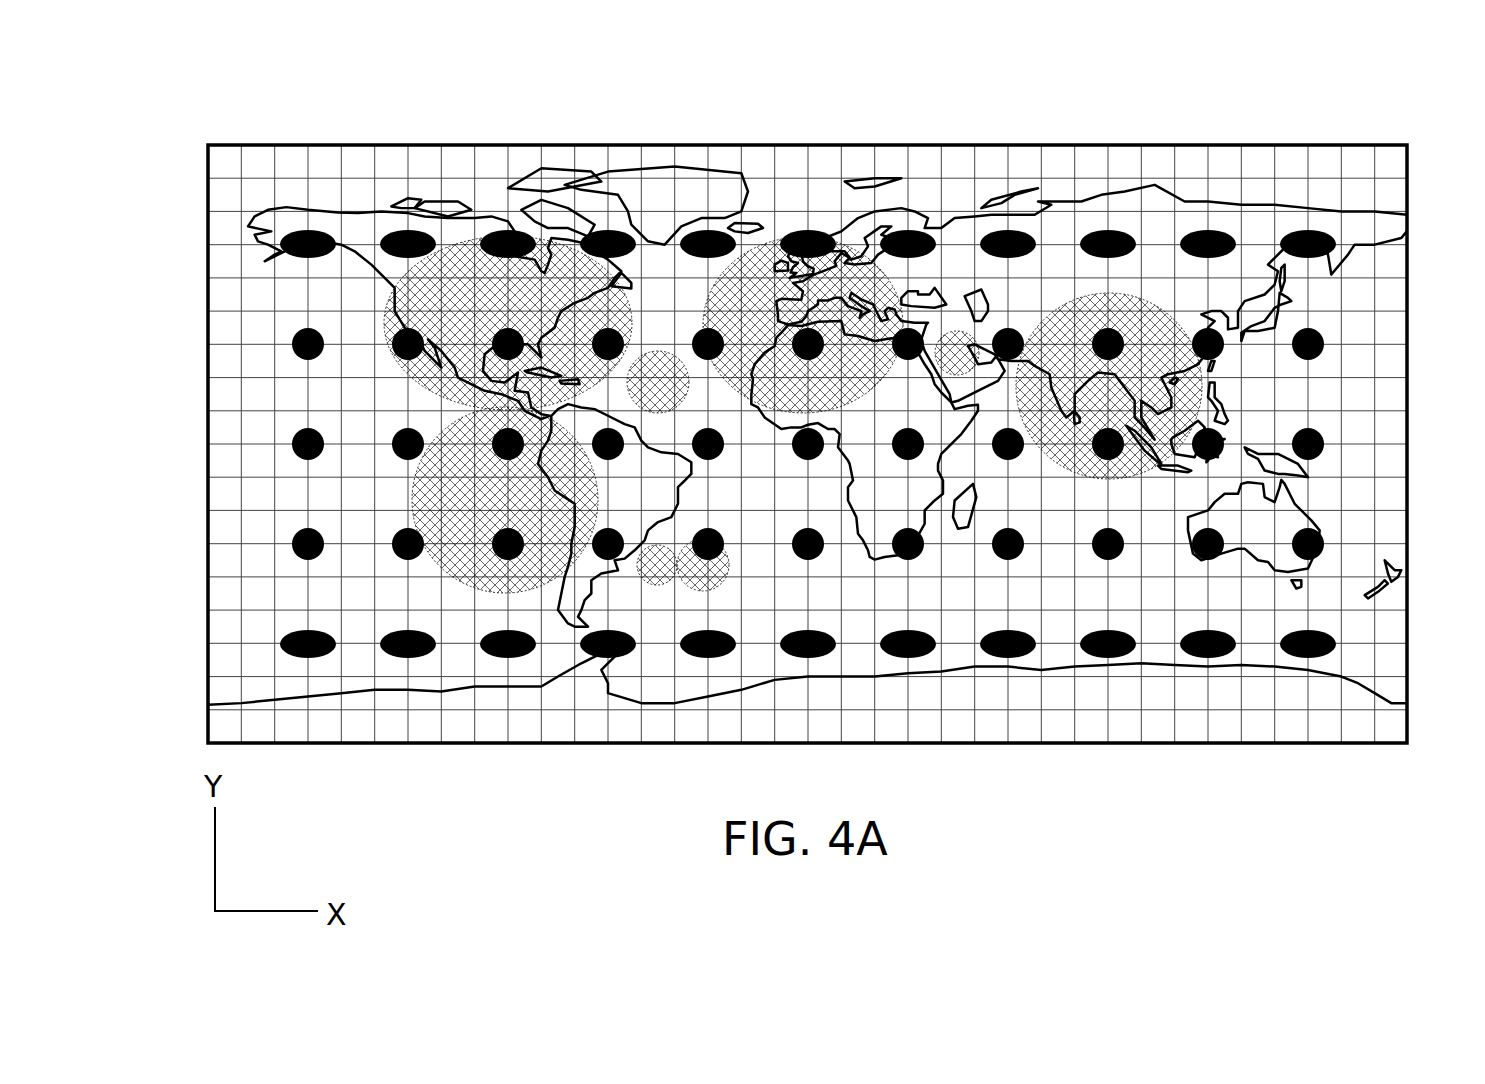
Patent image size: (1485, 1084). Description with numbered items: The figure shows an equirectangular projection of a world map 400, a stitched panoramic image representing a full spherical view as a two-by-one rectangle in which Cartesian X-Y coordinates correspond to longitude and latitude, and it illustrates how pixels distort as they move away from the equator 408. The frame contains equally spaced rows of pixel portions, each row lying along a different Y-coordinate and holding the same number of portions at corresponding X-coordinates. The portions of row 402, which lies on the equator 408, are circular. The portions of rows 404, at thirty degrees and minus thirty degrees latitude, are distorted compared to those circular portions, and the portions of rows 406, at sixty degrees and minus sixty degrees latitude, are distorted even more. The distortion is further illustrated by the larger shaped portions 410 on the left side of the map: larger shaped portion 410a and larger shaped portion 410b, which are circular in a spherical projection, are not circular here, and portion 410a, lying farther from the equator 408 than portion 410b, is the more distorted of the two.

The world map 400 is at (1187, 143).
The row 402 is at (186, 444).
The row 404 is at (186, 345).
The row 406 is at (186, 244).
The equator 408 is at (1352, 445).
The larger shaped portions 410 is at (772, 238).
The larger shaped portion 410a is at (456, 238).
The larger shaped portion 410b is at (462, 594).